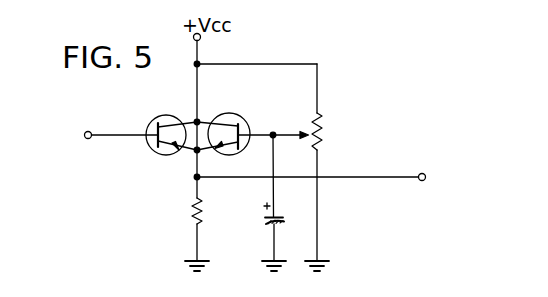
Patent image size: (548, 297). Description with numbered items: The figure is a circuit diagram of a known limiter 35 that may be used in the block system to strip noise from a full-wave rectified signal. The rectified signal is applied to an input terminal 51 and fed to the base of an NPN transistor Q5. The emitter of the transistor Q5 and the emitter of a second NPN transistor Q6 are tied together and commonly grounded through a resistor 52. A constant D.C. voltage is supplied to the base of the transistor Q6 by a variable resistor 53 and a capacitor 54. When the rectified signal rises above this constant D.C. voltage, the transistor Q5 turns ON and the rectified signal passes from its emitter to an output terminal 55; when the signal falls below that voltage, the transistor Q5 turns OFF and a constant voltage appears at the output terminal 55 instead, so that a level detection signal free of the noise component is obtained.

The limiter 35 is at (330, 51).
The input terminal 51 is at (88, 132).
The NPN transistor Q5 is at (164, 115).
The NPN transistor Q6 is at (238, 114).
The resistor 52 is at (192, 203).
The variable resistor 53 is at (321, 127).
The capacitor 54 is at (263, 220).
The output terminal 55 is at (422, 174).